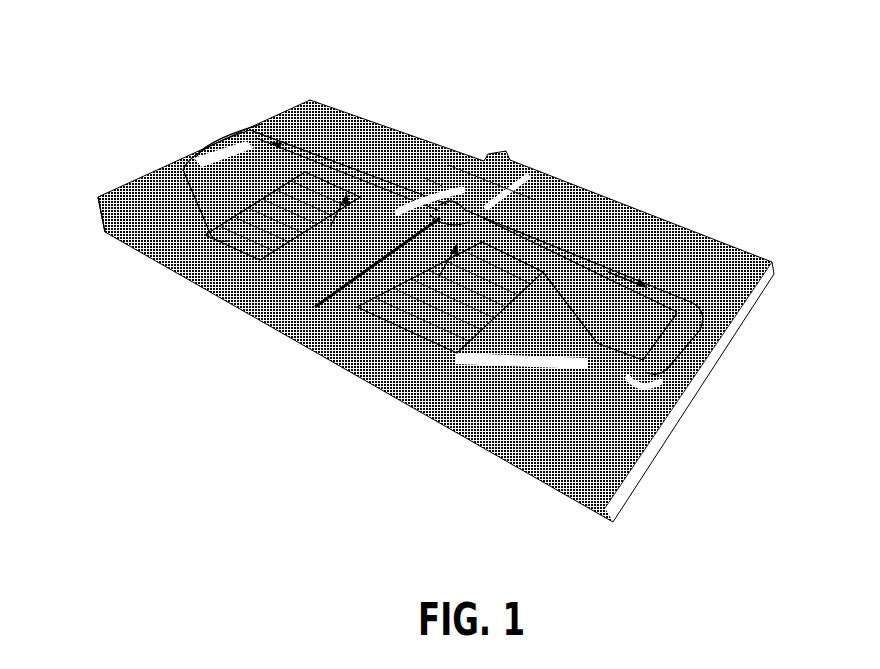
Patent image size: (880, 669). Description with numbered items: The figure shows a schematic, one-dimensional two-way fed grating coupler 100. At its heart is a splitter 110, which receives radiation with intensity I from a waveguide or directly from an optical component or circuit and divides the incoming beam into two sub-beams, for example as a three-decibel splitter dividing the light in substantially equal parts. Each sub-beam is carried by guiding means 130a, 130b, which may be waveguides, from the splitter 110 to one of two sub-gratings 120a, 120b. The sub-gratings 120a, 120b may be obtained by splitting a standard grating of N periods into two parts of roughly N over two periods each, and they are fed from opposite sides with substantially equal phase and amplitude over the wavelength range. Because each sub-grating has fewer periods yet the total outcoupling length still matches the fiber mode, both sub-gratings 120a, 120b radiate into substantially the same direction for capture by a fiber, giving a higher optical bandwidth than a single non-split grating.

The two-way fed grating coupler 100 is at (124, 67).
The splitter 110 is at (512, 183).
The sub-grating 120a is at (403, 316).
The sub-grating 120b is at (270, 247).
The guiding means 130a is at (590, 260).
The guiding means 130b is at (347, 168).
The intensity of the radiation I is at (503, 155).